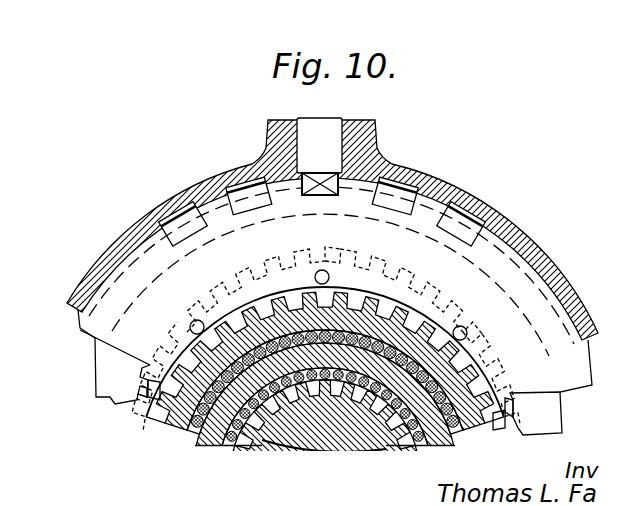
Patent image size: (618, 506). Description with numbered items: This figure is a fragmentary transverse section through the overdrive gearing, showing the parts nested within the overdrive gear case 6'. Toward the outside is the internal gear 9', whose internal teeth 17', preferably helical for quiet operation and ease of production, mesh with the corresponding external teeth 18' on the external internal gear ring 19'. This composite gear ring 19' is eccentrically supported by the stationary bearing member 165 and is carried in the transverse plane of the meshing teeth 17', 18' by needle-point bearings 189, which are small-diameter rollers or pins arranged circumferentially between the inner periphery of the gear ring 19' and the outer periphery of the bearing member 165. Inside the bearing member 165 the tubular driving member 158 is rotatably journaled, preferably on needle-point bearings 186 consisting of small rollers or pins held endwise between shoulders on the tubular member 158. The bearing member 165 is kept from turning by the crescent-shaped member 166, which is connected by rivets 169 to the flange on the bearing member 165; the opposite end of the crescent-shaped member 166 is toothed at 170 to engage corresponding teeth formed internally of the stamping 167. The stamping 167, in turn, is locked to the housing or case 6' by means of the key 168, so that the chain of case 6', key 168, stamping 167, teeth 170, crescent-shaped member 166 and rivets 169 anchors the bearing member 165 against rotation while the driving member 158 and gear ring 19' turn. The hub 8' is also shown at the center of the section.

The overdrive gear case 6' is at (332, 238).
The key 168 is at (322, 196).
The crescent-shaped member 166 is at (243, 287).
The teeth of crescent-shaped member 170 is at (400, 280).
The rivets 169 is at (318, 272).
The external internal gear ring 19' is at (325, 381).
The needle-point bearings 186 is at (393, 434).
The needle-point bearings 189 is at (447, 437).
The tubular driving member 158 is at (256, 438).
The hub 8' is at (325, 438).
The stationary bearing member 165 is at (170, 421).
The internal gear 9' is at (337, 377).
The stamping 167 is at (105, 335).
The internal teeth 17' is at (326, 423).
The external teeth 18' is at (326, 427).